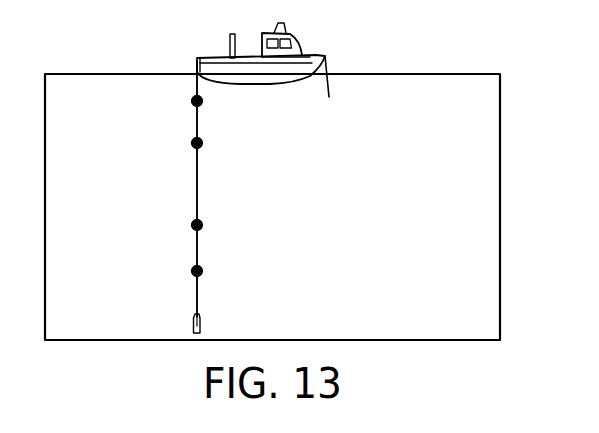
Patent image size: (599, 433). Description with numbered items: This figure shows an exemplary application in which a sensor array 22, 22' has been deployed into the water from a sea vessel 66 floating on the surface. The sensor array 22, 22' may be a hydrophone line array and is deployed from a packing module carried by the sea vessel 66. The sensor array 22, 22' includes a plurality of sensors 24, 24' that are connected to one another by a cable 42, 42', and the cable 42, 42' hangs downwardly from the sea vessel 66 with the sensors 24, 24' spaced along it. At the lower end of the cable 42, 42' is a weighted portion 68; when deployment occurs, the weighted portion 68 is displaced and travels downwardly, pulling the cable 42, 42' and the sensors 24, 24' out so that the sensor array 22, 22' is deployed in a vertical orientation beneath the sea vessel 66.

The sea vessel 66 is at (210, 64).
The sensor array 22 is at (159, 189).
The sensor array 22' is at (159, 189).
The cable 42 is at (136, 219).
The cable 42' is at (136, 219).
The sensors 24 is at (137, 267).
The sensors 24' is at (137, 267).
The weighted portion 68 is at (194, 316).